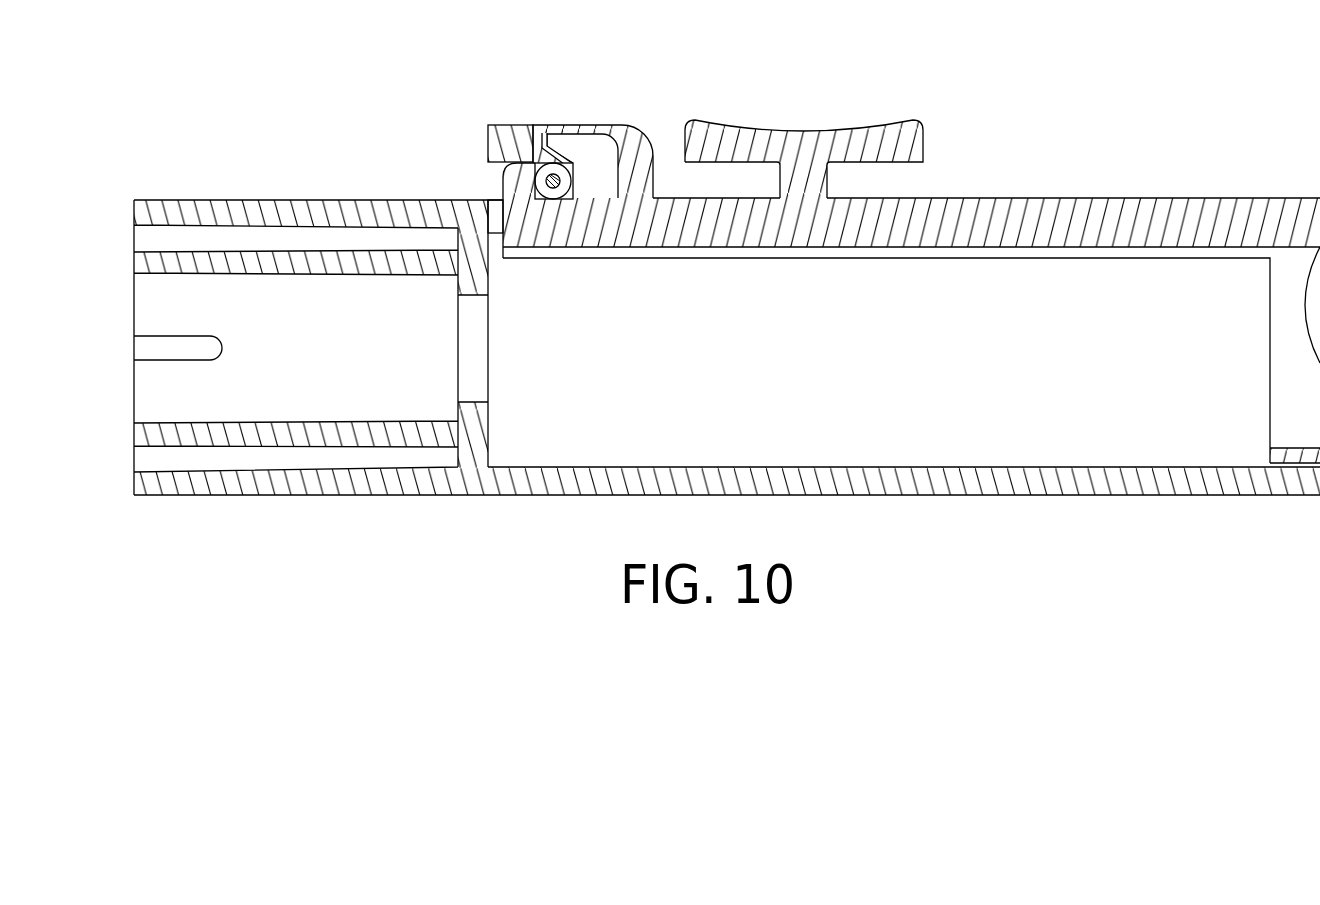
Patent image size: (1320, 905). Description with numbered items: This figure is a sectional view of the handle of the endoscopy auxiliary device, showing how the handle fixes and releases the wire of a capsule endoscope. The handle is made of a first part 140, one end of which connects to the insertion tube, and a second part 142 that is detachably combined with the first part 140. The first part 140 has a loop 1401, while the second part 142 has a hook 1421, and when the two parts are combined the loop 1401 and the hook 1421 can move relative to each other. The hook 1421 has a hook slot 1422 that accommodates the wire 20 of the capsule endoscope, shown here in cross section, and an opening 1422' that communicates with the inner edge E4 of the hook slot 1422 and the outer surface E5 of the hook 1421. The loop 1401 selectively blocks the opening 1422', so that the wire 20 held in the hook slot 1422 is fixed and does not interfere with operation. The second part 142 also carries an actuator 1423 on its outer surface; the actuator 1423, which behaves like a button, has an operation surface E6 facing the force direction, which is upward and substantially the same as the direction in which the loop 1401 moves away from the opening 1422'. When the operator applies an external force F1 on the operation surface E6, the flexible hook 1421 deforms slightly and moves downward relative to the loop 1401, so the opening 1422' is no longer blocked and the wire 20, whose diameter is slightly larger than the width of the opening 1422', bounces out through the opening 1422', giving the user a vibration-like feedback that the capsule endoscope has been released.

The first part 140 is at (204, 192).
The second part 142 is at (1120, 190).
The loop 1401 is at (513, 135).
The hook 1421 is at (570, 138).
The opening 1422' is at (476, 140).
The hook slot 1422 is at (581, 241).
The actuator 1423 is at (862, 137).
The wire 20 is at (560, 199).
The inner edge of the hook slot E4 is at (575, 188).
The outer surface of the hook E5 is at (634, 148).
The operation surface E6 is at (842, 115).
The external force F1 is at (804, 118).